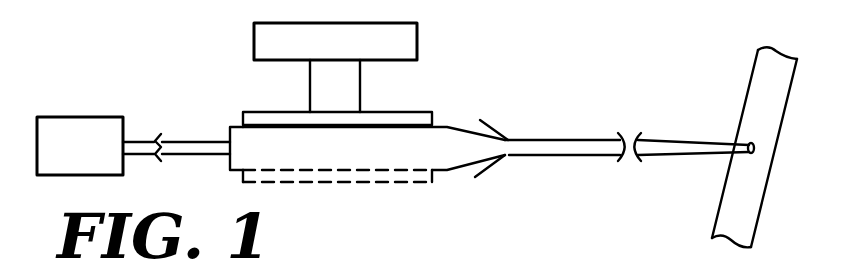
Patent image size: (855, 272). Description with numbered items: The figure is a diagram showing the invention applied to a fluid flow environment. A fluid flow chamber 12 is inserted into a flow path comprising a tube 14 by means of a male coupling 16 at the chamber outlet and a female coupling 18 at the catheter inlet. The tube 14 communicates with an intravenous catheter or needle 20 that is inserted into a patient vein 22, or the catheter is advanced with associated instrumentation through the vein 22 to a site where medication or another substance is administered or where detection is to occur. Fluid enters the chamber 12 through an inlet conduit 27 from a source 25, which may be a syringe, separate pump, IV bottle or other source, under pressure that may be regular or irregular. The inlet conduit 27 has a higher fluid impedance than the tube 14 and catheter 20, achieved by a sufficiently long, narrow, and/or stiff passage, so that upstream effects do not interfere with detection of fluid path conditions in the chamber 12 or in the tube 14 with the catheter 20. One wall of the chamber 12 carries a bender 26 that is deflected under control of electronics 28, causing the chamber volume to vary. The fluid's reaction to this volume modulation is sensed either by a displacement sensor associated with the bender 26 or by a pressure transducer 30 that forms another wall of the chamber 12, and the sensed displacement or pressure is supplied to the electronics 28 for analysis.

The fluid flow chamber 12 is at (457, 112).
The tube 14 is at (550, 140).
The male coupling 16 is at (462, 170).
The female coupling 18 is at (490, 128).
The intravenous catheter or needle 20 is at (687, 142).
The patient vein 22 is at (757, 84).
The fluid source 25 is at (89, 158).
The bender 26 is at (368, 110).
The inlet conduit 27 is at (203, 141).
The electronics 28 is at (417, 43).
The pressure transducer 30 is at (353, 183).